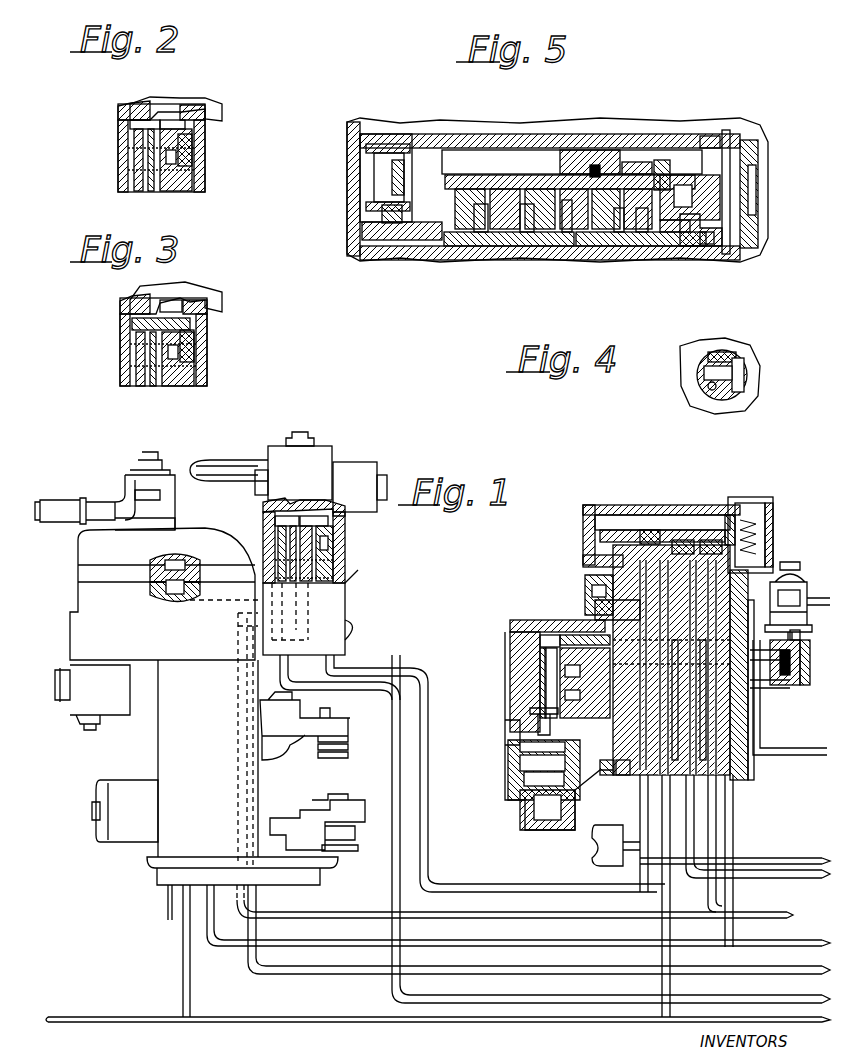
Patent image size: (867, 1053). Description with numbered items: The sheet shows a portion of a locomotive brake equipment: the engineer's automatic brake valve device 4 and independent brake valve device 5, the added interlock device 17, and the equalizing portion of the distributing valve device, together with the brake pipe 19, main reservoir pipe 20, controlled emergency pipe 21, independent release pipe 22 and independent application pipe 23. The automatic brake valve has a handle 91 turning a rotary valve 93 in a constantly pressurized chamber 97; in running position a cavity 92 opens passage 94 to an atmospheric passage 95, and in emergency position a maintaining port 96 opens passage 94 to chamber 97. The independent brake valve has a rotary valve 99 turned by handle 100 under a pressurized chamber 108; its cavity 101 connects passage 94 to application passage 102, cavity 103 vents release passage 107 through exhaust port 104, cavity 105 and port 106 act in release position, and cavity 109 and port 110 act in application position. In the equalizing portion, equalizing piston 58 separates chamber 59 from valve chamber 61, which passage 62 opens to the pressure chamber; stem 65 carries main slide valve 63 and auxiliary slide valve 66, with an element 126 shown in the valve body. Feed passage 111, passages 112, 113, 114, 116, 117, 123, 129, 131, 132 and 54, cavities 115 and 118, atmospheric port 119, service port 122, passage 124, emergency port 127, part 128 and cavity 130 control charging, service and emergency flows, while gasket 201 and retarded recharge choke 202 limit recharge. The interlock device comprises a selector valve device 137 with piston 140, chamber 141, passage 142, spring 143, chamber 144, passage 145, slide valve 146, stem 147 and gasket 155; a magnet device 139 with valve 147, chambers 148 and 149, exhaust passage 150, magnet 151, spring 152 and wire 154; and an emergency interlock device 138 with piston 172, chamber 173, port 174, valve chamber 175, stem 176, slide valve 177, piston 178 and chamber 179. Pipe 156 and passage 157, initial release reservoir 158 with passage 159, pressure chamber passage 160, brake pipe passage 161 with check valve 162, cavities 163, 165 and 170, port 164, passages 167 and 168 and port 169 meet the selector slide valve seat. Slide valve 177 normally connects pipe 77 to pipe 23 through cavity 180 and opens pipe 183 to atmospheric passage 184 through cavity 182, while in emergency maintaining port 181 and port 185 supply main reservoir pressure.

In FIG. 4, the automatic brake valve device 4 is at (694, 338).
In FIG. 1, the automatic brake valve device 4 is at (67, 567).
In FIG. 2, the independent brake valve device 5 is at (203, 100).
In FIG. 3, the independent brake valve device 5 is at (193, 290).
In FIG. 1, the independent brake valve device 5 is at (358, 452).
In FIG. 1, the interlock device 17 is at (618, 498).
In FIG. 1, the brake pipe 19 is at (292, 1030).
In FIG. 1, the main reservoir pipe 20 is at (478, 958).
In FIG. 1, the controlled emergency pipe 21 is at (520, 996).
In FIG. 1, the independent release pipe 22 is at (530, 962).
In FIG. 1, the independent application pipe 23 is at (748, 928).
In FIG. 5, the passage 54 is at (664, 246).
In FIG. 5, the equalizing piston 58 is at (726, 130).
In FIG. 5, the chamber 59 is at (748, 140).
In FIG. 5, the valve chamber 61 is at (586, 150).
In FIG. 5, the passage 62 is at (348, 182).
In FIG. 5, the main slide valve 63 is at (694, 186).
In FIG. 5, the stem 65 is at (428, 160).
In FIG. 5, the auxiliary slide valve 66 is at (624, 190).
In FIG. 1, the pipe 77 is at (812, 852).
In FIG. 1, the brake valve handle 91 is at (60, 505).
In FIG. 1, the cavity 92 is at (190, 578).
In FIG. 1, the rotary valve 93 is at (176, 560).
In FIG. 2, the passage 94 is at (118, 165).
In FIG. 3, the passage 94 is at (120, 360).
In FIG. 4, the passage 94 is at (738, 392).
In FIG. 1, the passage 94 is at (200, 614).
In FIG. 4, the atmospheric passage 95 is at (704, 388).
In FIG. 1, the atmospheric passage 95 is at (170, 594).
In FIG. 4, the maintaining port 96 is at (742, 366).
In FIG. 4, the chamber 97 is at (722, 356).
In FIG. 1, the chamber 97 is at (166, 558).
In FIG. 2, the rotary valve 99 is at (195, 142).
In FIG. 3, the rotary valve 99 is at (200, 316).
In FIG. 1, the rotary valve 99 is at (300, 432).
In FIG. 1, the handle 100 is at (216, 460).
In FIG. 1, the cavity 101 is at (286, 516).
In FIG. 2, the passage 102 is at (140, 192).
In FIG. 3, the passage 102 is at (142, 386).
In FIG. 1, the passage 102 is at (238, 690).
In FIG. 1, the cavity 103 is at (316, 516).
In FIG. 2, the exhaust port 104 is at (200, 165).
In FIG. 3, the exhaust port 104 is at (202, 340).
In FIG. 1, the exhaust port 104 is at (336, 556).
In FIG. 2, the cavity 105 is at (173, 120).
In FIG. 2, the port 106 is at (150, 120).
In FIG. 2, the passage 107 is at (168, 192).
In FIG. 3, the passage 107 is at (170, 386).
In FIG. 1, the passage 107 is at (250, 770).
In FIG. 2, the chamber 108 is at (126, 112).
In FIG. 3, the chamber 108 is at (128, 308).
In FIG. 1, the chamber 108 is at (272, 514).
In FIG. 3, the cavity 109 is at (195, 300).
In FIG. 3, the port 110 is at (132, 324).
In FIG. 5, the feed passage 111 is at (720, 236).
In FIG. 5, the passage 112 is at (536, 232).
In FIG. 5, the passage 113 is at (568, 240).
In FIG. 5, the passage 114 is at (526, 192).
In FIG. 5, the cavity 115 is at (660, 190).
In FIG. 5, the passage 116 is at (644, 240).
In FIG. 5, the passage 117 is at (494, 232).
In FIG. 5, the cavity 118 is at (466, 172).
In FIG. 5, the atmospheric port 119 is at (476, 246).
In FIG. 5, the service port 122 is at (562, 188).
In FIG. 5, the passage 123 is at (604, 246).
In FIG. 5, the passage 124 is at (498, 195).
In FIG. 5, the ring 126 is at (476, 182).
In FIG. 5, the port 127 is at (676, 170).
In FIG. 5, the part 128 is at (640, 162).
In FIG. 5, the passage 129 is at (436, 242).
In FIG. 5, the cavity 130 is at (606, 168).
In FIG. 5, the passage 131 is at (612, 164).
In FIG. 5, the passage 132 is at (622, 240).
In FIG. 1, the selector valve device 137 is at (664, 528).
In FIG. 1, the emergency interlock device 138 is at (498, 734).
In FIG. 1, the dynamic brake control magnet 139 is at (810, 586).
In FIG. 1, the piston 140 is at (748, 504).
In FIG. 1, the chamber 141 is at (760, 510).
In FIG. 1, the passage 142 is at (750, 594).
In FIG. 1, the spring 143 is at (760, 540).
In FIG. 1, the chamber 144 is at (730, 515).
In FIG. 1, the passage 145 is at (754, 712).
In FIG. 1, the slide valve 146 is at (604, 538).
In FIG. 1, the valve 147 is at (612, 518).
In FIG. 1, the chamber 148 is at (782, 686).
In FIG. 1, the chamber 149 is at (798, 690).
In FIG. 1, the atmospheric exhaust passage 150 is at (800, 622).
In FIG. 1, the magnet 151 is at (789, 598).
In FIG. 1, the spring 152 is at (806, 686).
In FIG. 1, the wire 154 is at (772, 762).
In FIG. 1, the gasket 155 is at (770, 510).
In FIG. 1, the pipe 156 is at (428, 873).
In FIG. 1, the passage 157 is at (736, 790).
In FIG. 1, the initial release reservoir 158 is at (594, 858).
In FIG. 1, the pipe and passage 159 is at (706, 730).
In FIG. 1, the pipe and passage 160 is at (678, 748).
In FIG. 1, the passage 161 is at (612, 612).
In FIG. 1, the check valve 162 is at (590, 590).
In FIG. 1, the cavity 163 is at (688, 540).
In FIG. 1, the atmospheric port 164 is at (708, 540).
In FIG. 1, the cavity 165 is at (650, 528).
In FIG. 1, the passage 167 is at (610, 775).
In FIG. 1, the passage 168 is at (626, 776).
In FIG. 1, the port 169 is at (628, 528).
In FIG. 1, the cavity 170 is at (586, 560).
In FIG. 1, the piston 172 is at (508, 764).
In FIG. 1, the chamber 173 is at (520, 764).
In FIG. 1, the port 174 is at (520, 747).
In FIG. 1, the valve chamber 175 is at (565, 680).
In FIG. 1, the stem 176 is at (545, 690).
In FIG. 1, the slide valve 177 is at (522, 644).
In FIG. 1, the piston 178 is at (525, 782).
In FIG. 1, the chamber 179 is at (534, 812).
In FIG. 1, the cavity 180 is at (538, 712).
In FIG. 1, the maintaining port 181 is at (548, 660).
In FIG. 1, the cavity 182 is at (560, 640).
In FIG. 1, the pipe 183 is at (752, 870).
In FIG. 1, the atmospheric passage 184 is at (545, 640).
In FIG. 1, the port 185 is at (536, 620).
In FIG. 5, the gasket 201 is at (708, 136).
In FIG. 5, the retarded recharge choke 202 is at (716, 246).